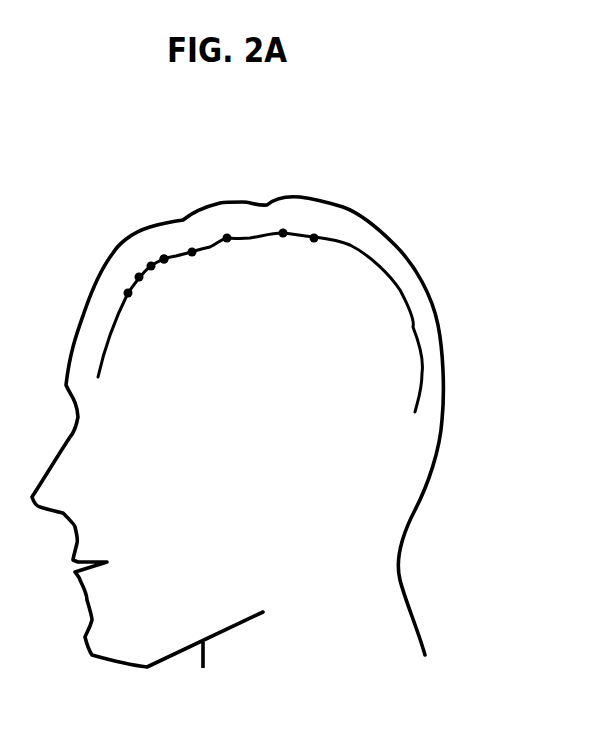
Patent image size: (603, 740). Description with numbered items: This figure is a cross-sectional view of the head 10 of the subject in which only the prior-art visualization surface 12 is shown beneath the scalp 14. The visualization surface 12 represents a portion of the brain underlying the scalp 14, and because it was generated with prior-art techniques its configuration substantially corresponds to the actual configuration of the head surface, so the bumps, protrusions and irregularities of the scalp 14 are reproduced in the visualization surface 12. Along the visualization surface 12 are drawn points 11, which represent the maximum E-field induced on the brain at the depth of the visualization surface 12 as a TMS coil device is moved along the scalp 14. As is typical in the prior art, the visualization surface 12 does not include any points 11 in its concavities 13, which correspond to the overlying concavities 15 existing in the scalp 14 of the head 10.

The head 10 is at (420, 237).
The points 11 is at (227, 240).
The visualization surface 12 is at (413, 325).
The concavities 13 is at (176, 260).
The scalp 14 is at (345, 207).
The concavities 15 is at (183, 222).